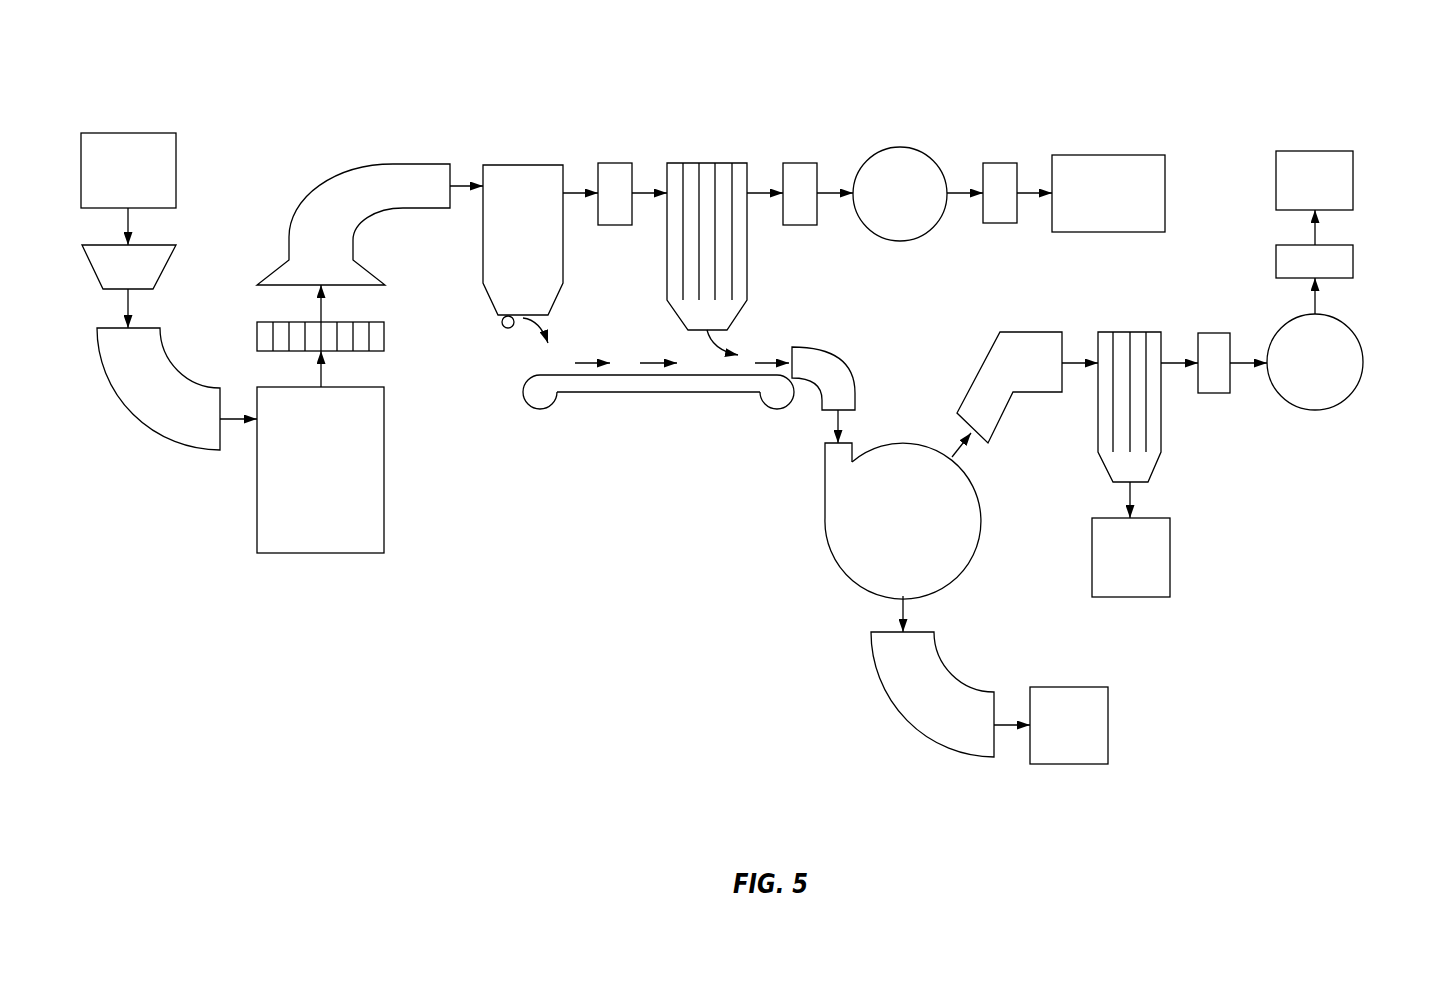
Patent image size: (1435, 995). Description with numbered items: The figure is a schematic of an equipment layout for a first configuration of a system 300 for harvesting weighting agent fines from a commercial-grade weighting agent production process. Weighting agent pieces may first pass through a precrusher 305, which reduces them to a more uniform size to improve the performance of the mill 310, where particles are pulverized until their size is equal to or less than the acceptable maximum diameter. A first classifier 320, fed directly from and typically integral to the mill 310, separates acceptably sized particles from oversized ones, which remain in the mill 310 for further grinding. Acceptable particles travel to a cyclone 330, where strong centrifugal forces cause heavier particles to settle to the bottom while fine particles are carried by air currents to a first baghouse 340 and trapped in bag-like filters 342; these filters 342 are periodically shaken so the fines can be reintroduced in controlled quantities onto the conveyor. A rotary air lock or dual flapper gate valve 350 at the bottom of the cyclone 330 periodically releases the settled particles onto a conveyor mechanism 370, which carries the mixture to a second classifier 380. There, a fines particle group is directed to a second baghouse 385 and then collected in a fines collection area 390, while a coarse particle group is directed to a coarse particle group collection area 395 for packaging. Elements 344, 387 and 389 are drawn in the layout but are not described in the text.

The system 300 is at (218, 66).
The precrusher 305 is at (128, 133).
The mill 310 is at (257, 510).
The first classifier 320 is at (257, 333).
The cyclone 330 is at (523, 165).
The first baghouse 340 is at (678, 163).
The bag-like filters 342 is at (683, 173).
The storage unit 344 is at (1143, 155).
The dual flapper gate valve 350 is at (518, 337).
The conveyor mechanism 370 is at (655, 392).
The second classifier 380 is at (825, 505).
The second baghouse 385 is at (1163, 422).
The fan 387 is at (1345, 325).
The exhaust stack 389 is at (1330, 151).
The fines collection area 390 is at (1170, 557).
The coarse particle group collection area 395 is at (1108, 725).